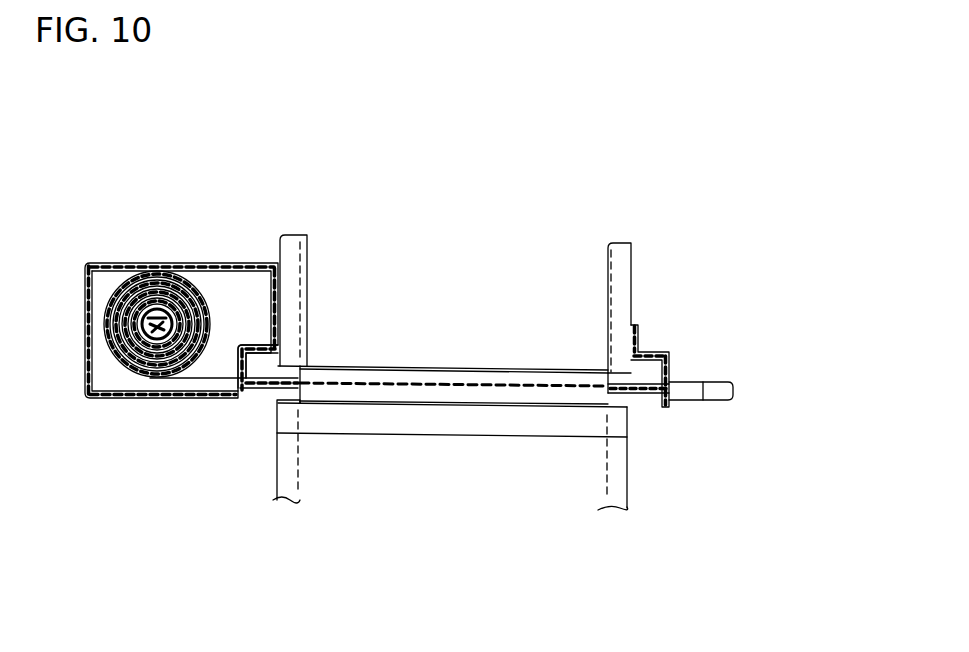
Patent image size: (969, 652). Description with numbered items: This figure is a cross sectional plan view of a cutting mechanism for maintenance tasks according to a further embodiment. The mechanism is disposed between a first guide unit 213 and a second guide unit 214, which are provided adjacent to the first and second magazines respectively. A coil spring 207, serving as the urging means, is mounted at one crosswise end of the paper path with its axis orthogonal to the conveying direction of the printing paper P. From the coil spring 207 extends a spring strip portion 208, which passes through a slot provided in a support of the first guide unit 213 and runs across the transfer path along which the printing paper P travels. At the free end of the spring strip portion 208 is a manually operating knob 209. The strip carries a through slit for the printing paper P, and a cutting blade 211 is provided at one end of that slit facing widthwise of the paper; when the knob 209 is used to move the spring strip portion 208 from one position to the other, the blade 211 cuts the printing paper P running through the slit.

The coil spring 207 is at (144, 382).
The spring strip portion 208 is at (652, 400).
The manually operating knob 209 is at (733, 380).
The cutting blade 211 is at (275, 388).
The first guide unit 213 is at (622, 274).
The second guide unit 214 is at (612, 467).
The printing paper P is at (522, 387).